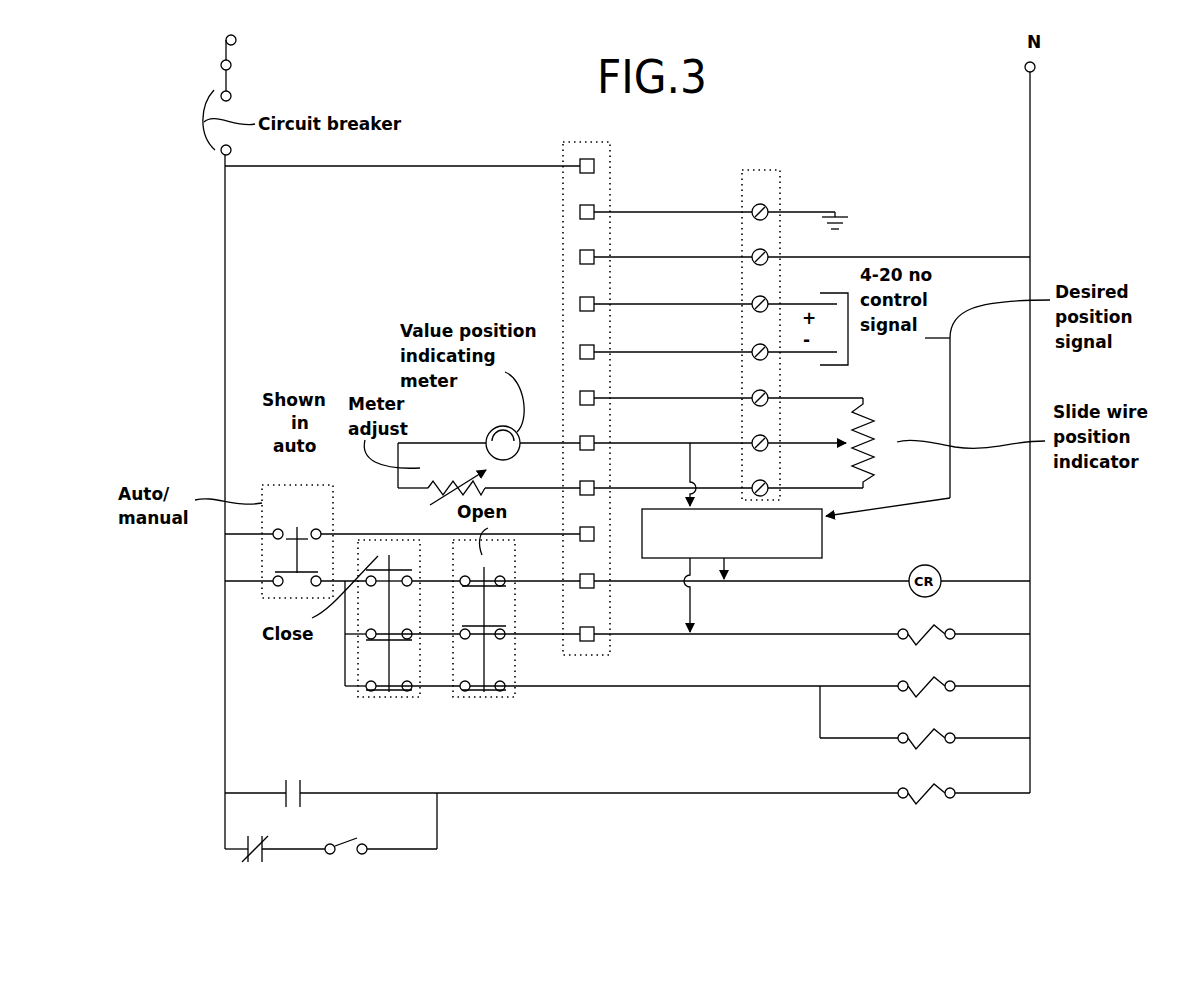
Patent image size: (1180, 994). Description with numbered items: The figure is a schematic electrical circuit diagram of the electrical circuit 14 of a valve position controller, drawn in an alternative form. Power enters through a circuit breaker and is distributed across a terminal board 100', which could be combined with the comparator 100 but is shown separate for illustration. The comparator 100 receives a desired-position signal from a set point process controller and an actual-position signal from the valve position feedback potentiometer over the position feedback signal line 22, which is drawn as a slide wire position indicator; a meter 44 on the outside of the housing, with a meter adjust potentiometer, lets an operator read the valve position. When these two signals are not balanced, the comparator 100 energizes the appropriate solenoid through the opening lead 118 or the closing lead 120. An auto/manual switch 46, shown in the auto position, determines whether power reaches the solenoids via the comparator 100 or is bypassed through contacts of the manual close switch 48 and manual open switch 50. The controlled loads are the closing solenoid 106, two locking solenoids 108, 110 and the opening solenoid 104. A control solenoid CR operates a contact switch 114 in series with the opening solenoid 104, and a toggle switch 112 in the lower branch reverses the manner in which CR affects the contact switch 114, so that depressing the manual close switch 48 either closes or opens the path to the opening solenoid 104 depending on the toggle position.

The electrical circuit 14 is at (824, 172).
The terminal board 100' is at (638, 388).
The meter 44 is at (488, 437).
The auto/manual switch 46 is at (297, 532).
The manual close switch 48 is at (392, 558).
The manual open switch 50 is at (488, 578).
The position feedback signal line 22 is at (804, 442).
The opening lead 118 is at (868, 398).
The comparator 100 is at (778, 533).
The closing lead 120 is at (692, 612).
The closing solenoid 106 is at (948, 630).
The locking solenoid 108 is at (948, 682).
The locking solenoid 110 is at (948, 734).
The opening solenoid 104 is at (925, 797).
The contact switch 114 is at (305, 778).
The toggle switch 112 is at (352, 853).